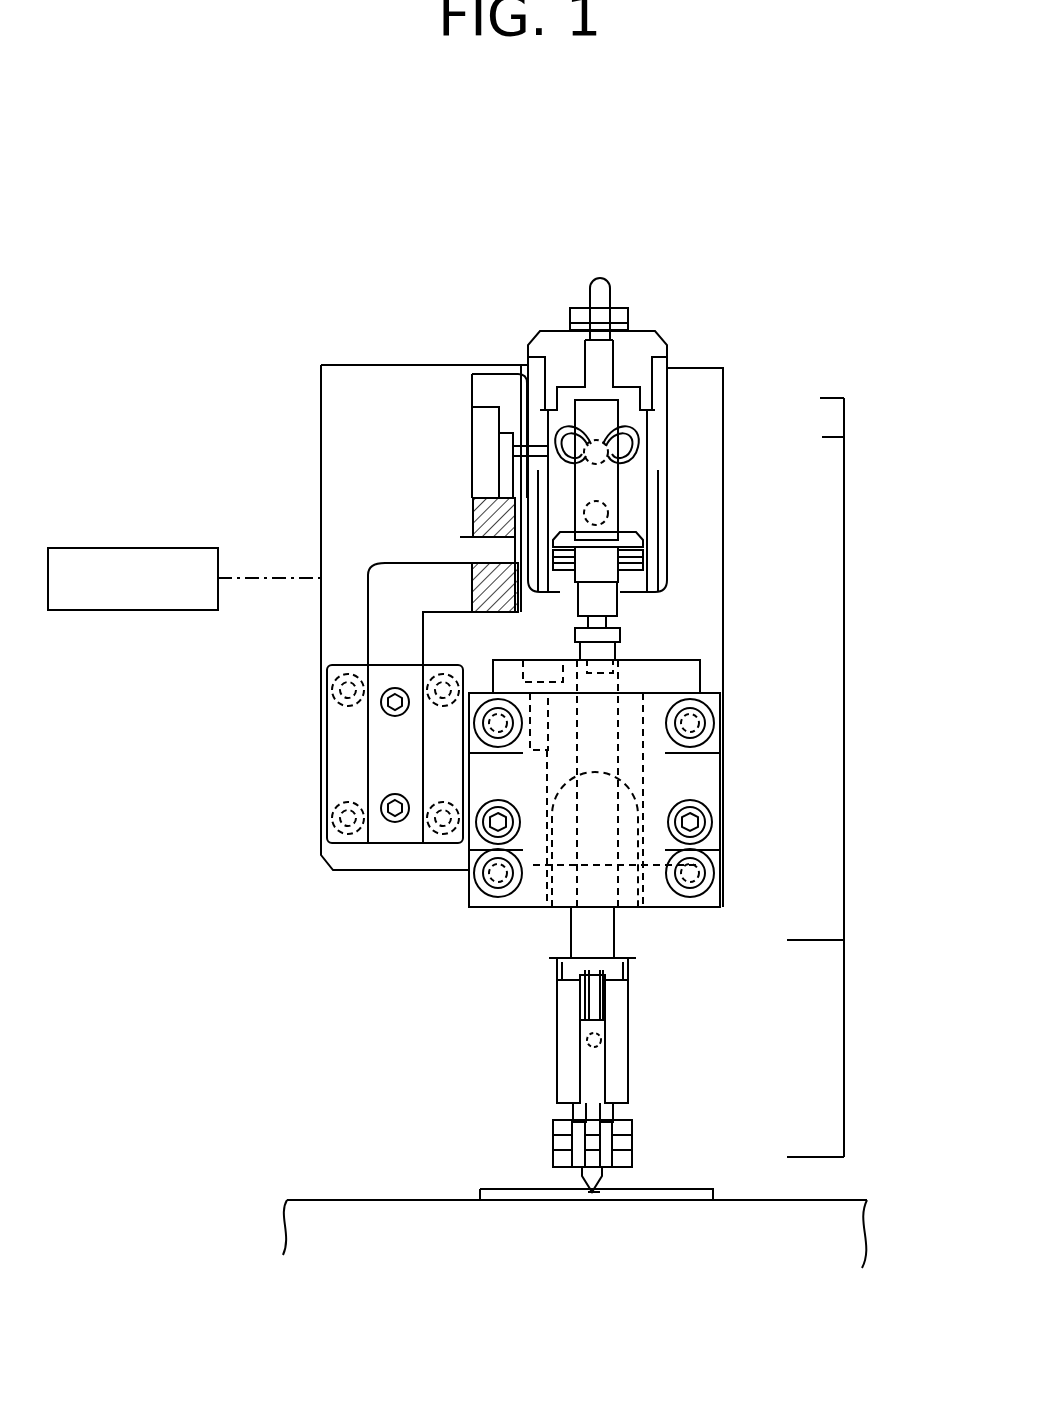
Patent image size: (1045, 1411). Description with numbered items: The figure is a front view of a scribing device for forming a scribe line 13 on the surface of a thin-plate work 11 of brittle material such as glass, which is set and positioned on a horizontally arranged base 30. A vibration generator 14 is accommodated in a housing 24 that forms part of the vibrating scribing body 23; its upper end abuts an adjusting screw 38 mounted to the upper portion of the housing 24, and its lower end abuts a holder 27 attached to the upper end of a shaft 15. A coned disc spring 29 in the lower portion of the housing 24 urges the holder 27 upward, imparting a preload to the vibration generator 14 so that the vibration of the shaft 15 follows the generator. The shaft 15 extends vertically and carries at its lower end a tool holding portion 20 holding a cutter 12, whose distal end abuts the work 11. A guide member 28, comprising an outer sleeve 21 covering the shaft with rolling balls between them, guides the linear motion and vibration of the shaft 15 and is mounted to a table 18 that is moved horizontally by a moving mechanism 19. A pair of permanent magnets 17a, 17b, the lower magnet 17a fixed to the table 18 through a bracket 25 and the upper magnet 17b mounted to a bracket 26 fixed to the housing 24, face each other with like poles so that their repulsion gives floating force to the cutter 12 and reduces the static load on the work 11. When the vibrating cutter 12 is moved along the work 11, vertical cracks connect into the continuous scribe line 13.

The work 11 is at (505, 1188).
The cutter 12 is at (600, 1178).
The scribe line 13 is at (598, 1196).
The vibration generator 14 is at (612, 480).
The shaft 15 is at (605, 932).
The magnet 17a is at (470, 580).
The magnet 17b is at (475, 522).
The table 18 is at (700, 605).
The moving mechanism 19 is at (118, 612).
The tool holding portion 20 is at (618, 1058).
The outer sleeve 21 is at (844, 768).
The scribing body 23 is at (844, 745).
The housing 24 is at (658, 445).
The bracket 25 is at (383, 643).
The bracket 26 is at (485, 383).
The holder 27 is at (625, 535).
The guide member 28 is at (643, 716).
The spring 29 is at (645, 562).
The base 30 is at (840, 1218).
The adjusting screw 38 is at (600, 370).